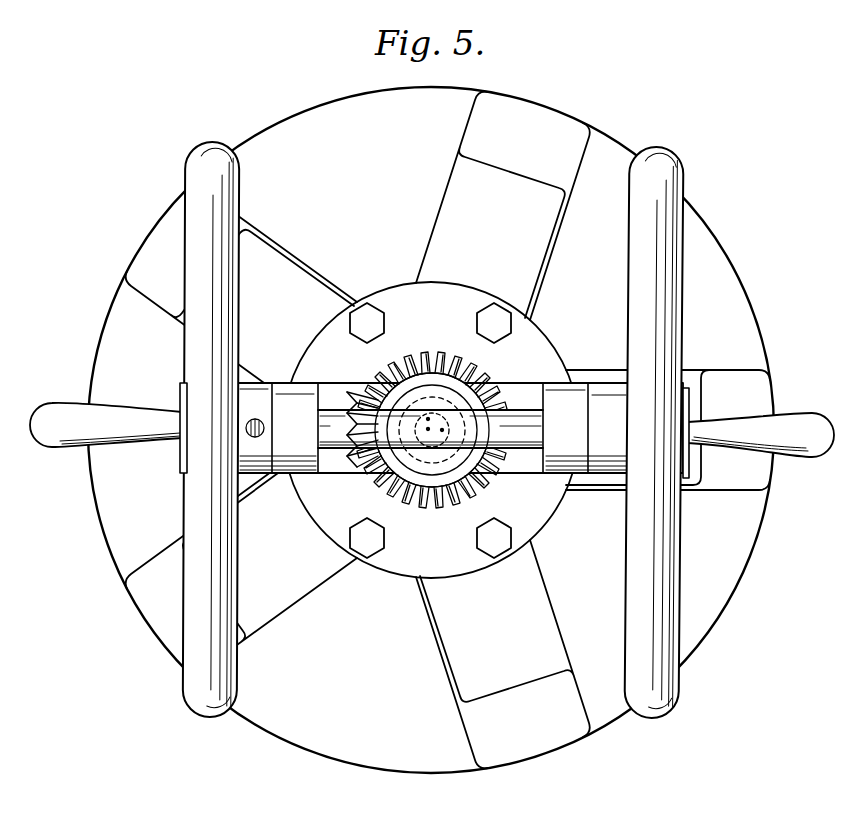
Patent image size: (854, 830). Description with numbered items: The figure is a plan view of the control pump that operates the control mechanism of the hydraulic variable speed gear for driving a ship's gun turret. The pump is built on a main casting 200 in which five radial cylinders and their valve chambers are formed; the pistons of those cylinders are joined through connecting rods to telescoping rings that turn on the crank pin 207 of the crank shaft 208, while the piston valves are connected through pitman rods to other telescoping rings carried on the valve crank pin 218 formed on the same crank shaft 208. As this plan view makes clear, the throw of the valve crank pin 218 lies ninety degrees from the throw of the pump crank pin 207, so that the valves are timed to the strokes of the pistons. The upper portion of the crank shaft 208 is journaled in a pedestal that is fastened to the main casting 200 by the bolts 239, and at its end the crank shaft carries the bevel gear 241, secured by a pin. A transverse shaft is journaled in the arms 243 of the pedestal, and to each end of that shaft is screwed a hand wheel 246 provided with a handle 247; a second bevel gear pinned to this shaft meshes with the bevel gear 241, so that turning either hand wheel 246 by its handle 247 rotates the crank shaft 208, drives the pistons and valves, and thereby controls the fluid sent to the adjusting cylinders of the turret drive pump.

The main casting 200 is at (338, 731).
The crank pin 207 is at (445, 405).
The crank shaft 208 is at (434, 409).
The valve crank pin 218 is at (425, 411).
The bolts 239 is at (367, 560).
The bevel gear 241 is at (382, 379).
The arms 243 is at (578, 462).
The hand wheel 246 is at (677, 700).
The handle 247 is at (803, 443).